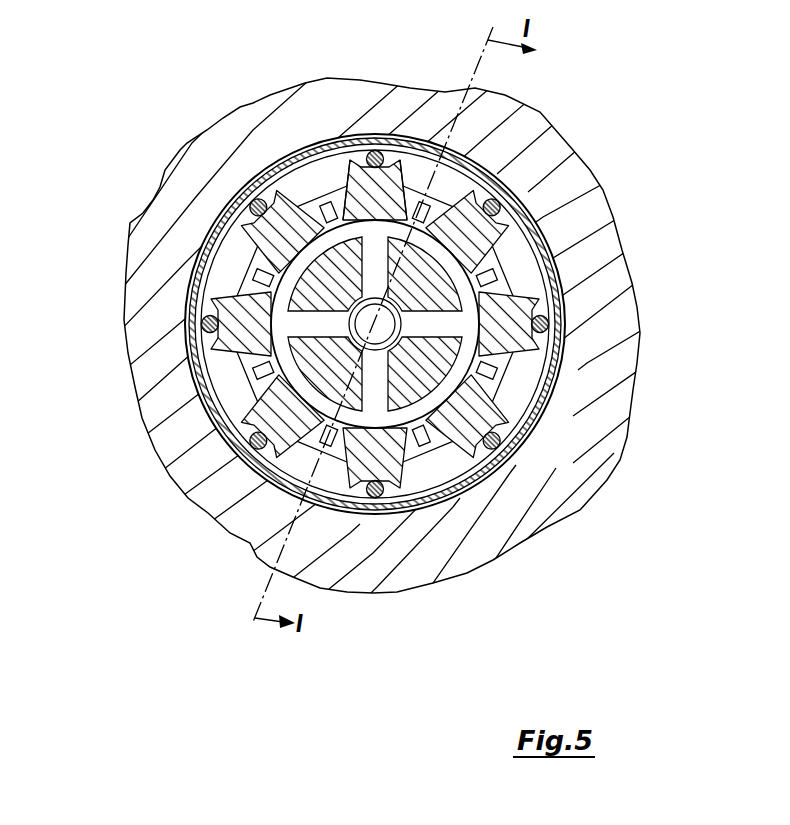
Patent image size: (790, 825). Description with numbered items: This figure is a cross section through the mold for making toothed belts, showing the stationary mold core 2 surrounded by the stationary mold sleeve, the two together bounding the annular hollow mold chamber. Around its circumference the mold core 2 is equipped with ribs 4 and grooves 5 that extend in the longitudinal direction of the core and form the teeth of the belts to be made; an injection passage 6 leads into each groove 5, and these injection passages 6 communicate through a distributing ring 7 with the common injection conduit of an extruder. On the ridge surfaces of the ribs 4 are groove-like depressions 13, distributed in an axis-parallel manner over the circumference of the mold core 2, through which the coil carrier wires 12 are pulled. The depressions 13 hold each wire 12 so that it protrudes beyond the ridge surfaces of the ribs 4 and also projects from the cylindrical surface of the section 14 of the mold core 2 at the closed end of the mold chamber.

The mold core 2 is at (233, 333).
The ribs 4 is at (487, 415).
The grooves 5 is at (448, 462).
The injection passage 6 is at (322, 210).
The distributing ring 7 is at (295, 265).
The coil carrier wire 12 is at (247, 203).
The groove-like depressions 13 is at (298, 258).
The section of the mold core 14 is at (222, 288).